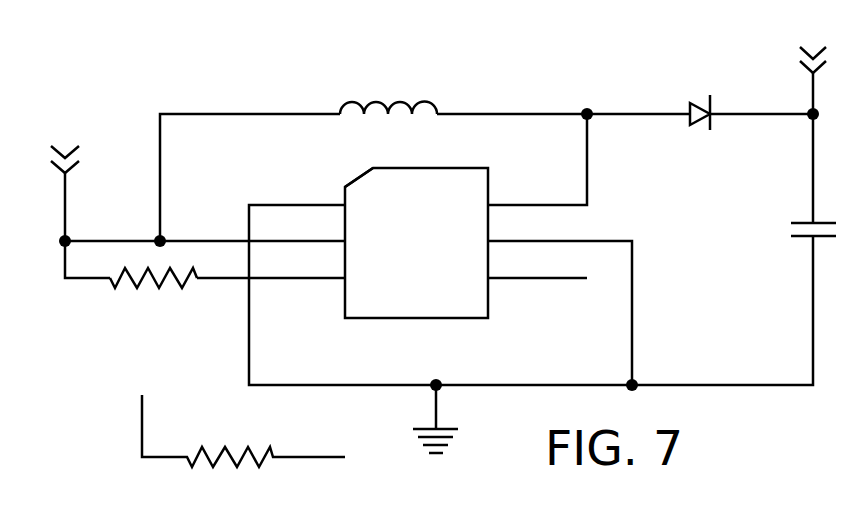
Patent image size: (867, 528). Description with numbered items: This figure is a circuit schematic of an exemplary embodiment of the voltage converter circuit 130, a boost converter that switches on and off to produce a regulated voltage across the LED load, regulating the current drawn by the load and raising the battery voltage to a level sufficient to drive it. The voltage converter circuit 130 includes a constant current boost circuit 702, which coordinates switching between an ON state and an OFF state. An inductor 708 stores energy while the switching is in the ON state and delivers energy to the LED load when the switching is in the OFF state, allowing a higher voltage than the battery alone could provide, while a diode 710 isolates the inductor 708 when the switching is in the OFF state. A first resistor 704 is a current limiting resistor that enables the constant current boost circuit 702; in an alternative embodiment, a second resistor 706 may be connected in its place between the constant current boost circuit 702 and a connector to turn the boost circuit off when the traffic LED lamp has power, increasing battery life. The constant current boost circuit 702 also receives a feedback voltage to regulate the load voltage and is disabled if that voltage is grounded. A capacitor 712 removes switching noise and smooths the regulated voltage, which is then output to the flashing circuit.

The voltage converter circuit 130 is at (172, 80).
The constant current boost circuit 702 is at (345, 175).
The first resistor 704 is at (155, 283).
The second resistor 706 is at (250, 459).
The inductor 708 is at (397, 104).
The diode 710 is at (691, 106).
The capacitor 712 is at (806, 240).